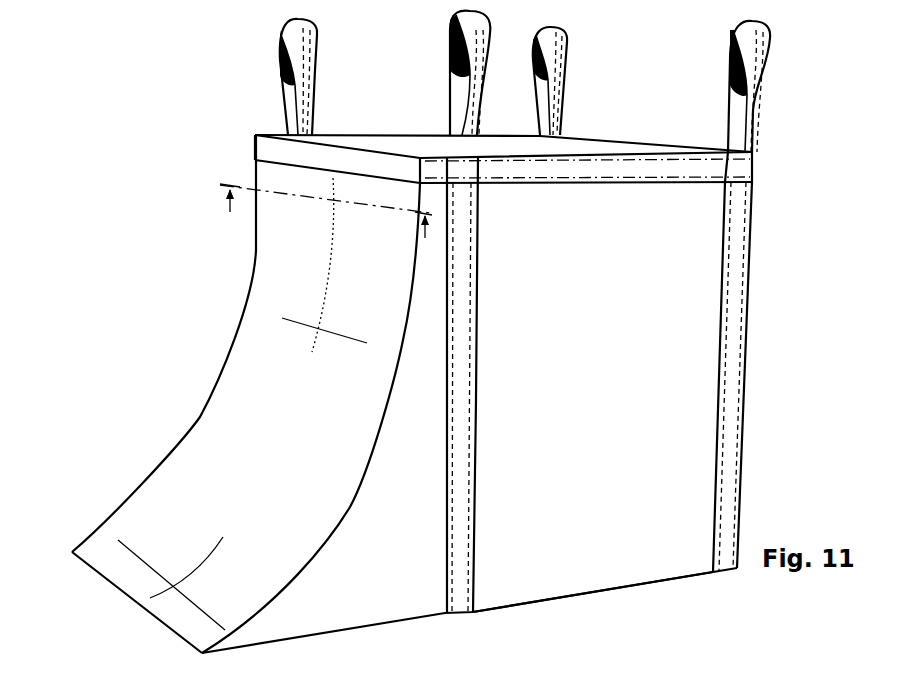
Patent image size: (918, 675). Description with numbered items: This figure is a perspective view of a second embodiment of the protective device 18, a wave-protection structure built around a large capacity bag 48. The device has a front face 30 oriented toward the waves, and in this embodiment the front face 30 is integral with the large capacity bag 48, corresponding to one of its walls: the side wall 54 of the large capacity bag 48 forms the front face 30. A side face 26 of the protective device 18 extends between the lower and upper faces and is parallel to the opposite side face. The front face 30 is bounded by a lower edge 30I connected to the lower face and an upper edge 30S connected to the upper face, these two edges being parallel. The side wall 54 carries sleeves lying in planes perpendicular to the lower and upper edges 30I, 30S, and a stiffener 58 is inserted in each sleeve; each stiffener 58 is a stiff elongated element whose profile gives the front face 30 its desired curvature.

The protective device 18 is at (474, 343).
The side face 26 is at (695, 330).
The front face 30 is at (250, 363).
The upper edge 30S is at (346, 157).
The lower edge 30I is at (147, 610).
The large capacity bag 48 is at (617, 203).
The side wall 54 is at (217, 485).
The stiffener 58 is at (470, 622).